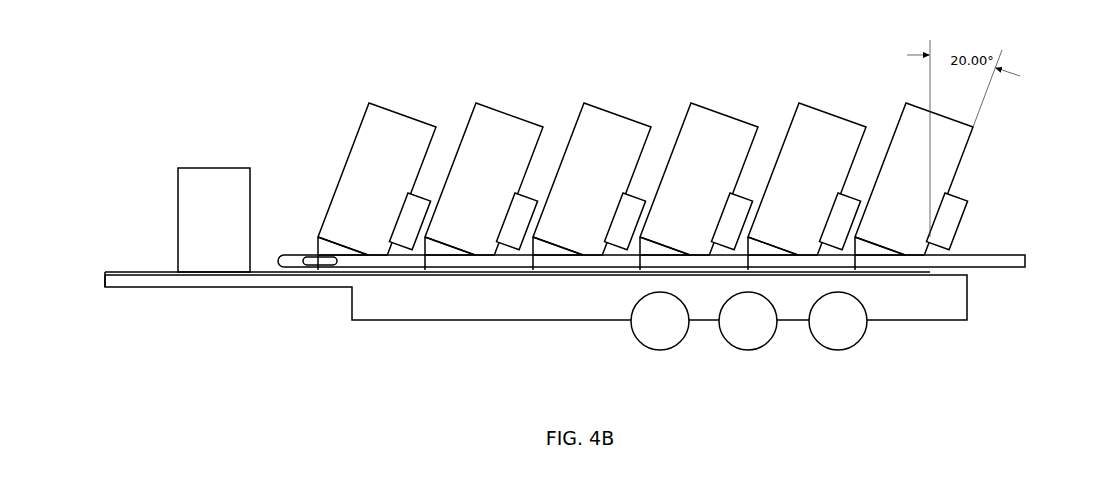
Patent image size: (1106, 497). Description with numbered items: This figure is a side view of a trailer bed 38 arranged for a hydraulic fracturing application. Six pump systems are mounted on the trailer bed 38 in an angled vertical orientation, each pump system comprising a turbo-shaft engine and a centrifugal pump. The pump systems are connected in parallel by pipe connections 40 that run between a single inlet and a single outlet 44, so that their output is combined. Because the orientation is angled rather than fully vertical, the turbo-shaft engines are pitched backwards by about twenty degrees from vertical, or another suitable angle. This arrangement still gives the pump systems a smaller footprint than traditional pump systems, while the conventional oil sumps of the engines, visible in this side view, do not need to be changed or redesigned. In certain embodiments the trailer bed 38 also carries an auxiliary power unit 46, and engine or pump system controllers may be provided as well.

The trailer bed 38 is at (536, 316).
The pipe connections 40 is at (480, 260).
The outlet 44 is at (1025, 260).
The auxiliary power unit 46 is at (212, 183).